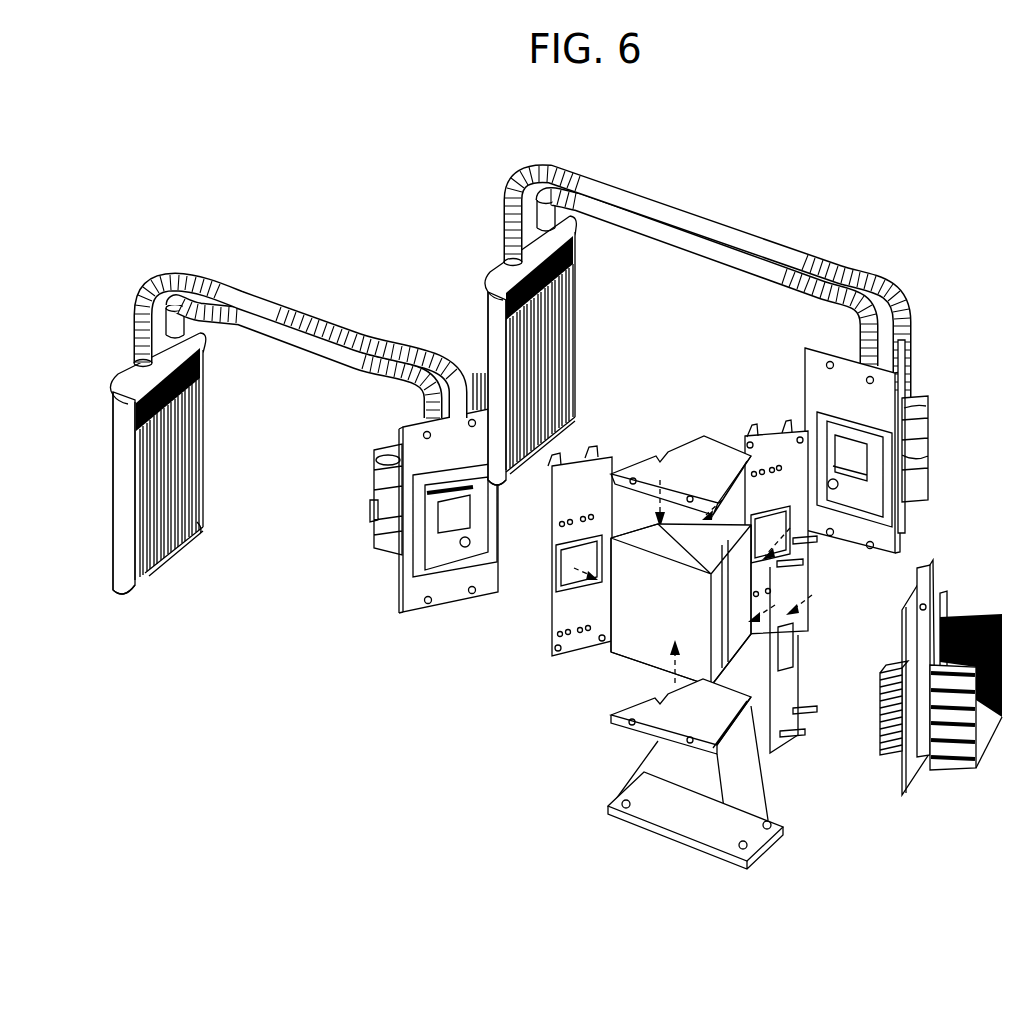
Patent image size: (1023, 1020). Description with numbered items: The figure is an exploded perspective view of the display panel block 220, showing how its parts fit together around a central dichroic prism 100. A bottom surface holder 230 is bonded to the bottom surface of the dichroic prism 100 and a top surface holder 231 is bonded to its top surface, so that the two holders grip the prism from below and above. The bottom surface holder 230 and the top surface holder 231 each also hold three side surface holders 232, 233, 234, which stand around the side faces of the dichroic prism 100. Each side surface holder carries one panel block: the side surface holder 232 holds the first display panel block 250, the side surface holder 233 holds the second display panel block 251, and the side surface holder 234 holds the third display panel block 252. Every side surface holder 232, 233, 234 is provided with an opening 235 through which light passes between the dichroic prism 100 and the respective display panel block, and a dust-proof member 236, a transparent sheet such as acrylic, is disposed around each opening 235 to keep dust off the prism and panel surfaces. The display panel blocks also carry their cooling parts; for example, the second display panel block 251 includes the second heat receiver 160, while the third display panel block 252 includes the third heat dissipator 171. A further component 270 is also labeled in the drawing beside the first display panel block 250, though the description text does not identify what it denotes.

The display panel block 220 is at (595, 114).
The dichroic prism 100 is at (630, 648).
The second heat receiver 160 is at (576, 336).
The third heat dissipator 171 is at (120, 552).
The bottom surface holder 230 is at (677, 813).
The top surface holder 231 is at (683, 466).
The side surface holder 232 is at (786, 680).
The side surface holder 233 is at (780, 465).
The side surface holder 234 is at (560, 618).
The opening 235 is at (570, 578).
The dust-proof member 236 is at (557, 548).
The first display panel block 250 is at (1012, 582).
The second display panel block 251 is at (940, 291).
The third display panel block 252 is at (474, 344).
The heat sink 270 is at (900, 752).